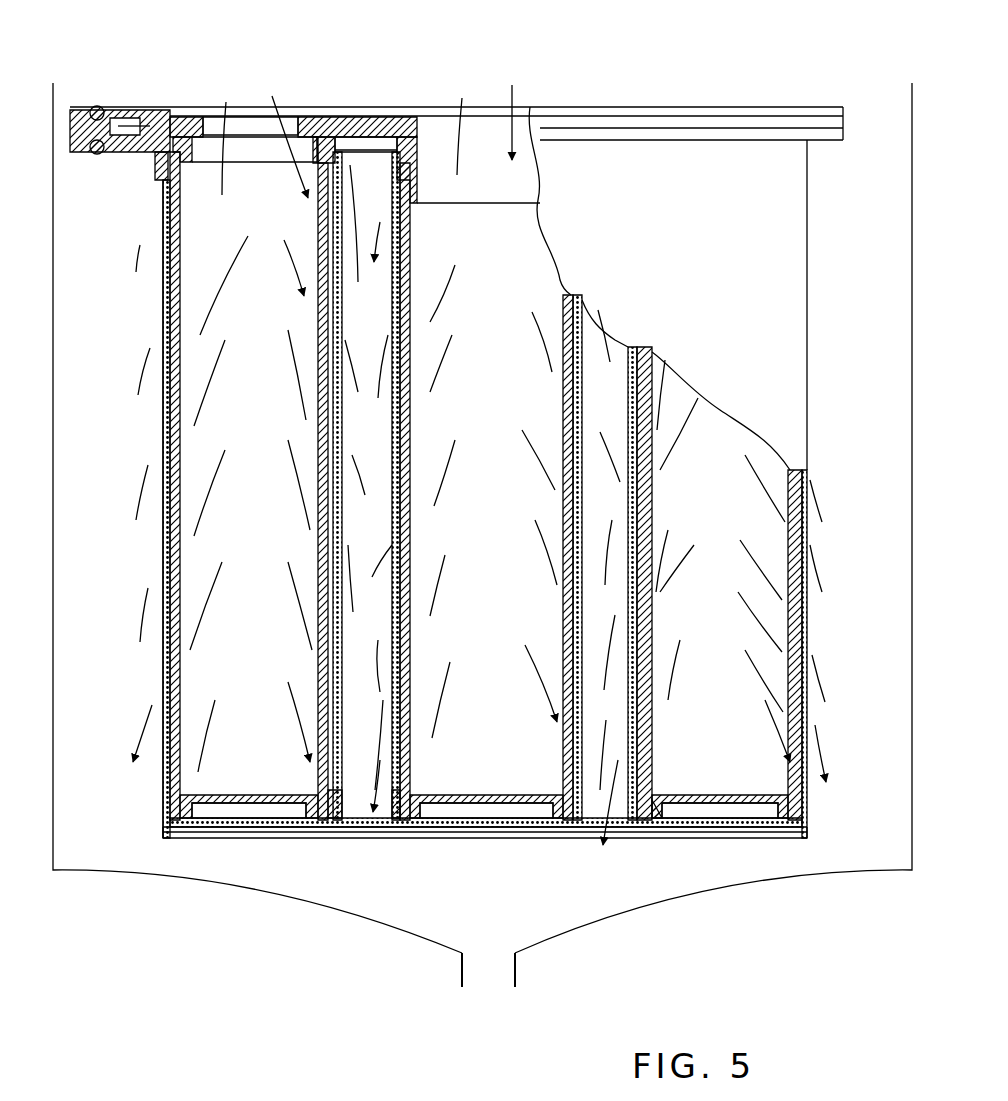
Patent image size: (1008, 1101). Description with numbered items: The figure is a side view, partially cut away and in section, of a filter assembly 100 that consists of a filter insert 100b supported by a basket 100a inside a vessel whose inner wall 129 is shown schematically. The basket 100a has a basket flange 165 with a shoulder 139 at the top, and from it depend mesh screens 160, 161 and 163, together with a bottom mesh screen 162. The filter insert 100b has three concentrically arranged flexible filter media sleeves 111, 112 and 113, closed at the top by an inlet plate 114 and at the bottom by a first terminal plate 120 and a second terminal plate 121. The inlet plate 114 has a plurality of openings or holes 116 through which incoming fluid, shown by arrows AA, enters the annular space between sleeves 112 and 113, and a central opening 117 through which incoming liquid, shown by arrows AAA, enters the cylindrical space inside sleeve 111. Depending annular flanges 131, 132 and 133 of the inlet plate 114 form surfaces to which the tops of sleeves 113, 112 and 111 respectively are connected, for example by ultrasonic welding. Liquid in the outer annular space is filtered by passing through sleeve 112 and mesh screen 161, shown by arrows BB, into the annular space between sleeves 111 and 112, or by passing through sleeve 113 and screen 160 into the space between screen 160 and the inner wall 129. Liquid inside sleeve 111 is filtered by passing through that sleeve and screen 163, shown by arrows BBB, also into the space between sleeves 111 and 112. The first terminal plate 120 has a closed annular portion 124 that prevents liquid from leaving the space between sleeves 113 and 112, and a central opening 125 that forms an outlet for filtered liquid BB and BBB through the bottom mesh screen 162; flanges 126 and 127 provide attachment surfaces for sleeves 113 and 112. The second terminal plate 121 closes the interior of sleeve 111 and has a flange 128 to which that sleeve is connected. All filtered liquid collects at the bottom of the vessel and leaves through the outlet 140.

The filter assembly 100 is at (134, 308).
The basket 100a is at (140, 182).
The filter insert 100b is at (180, 574).
The filter media sleeve 111 is at (410, 682).
The filter media sleeve 112 is at (318, 686).
The filter media sleeve 113 is at (163, 658).
The inlet plate 114 is at (368, 100).
The openings or holes 116 is at (250, 135).
The central opening 117 is at (395, 112).
The first terminal plate 120 is at (236, 826).
The second terminal plate 121 is at (520, 795).
The closed annular portion 124 is at (300, 795).
The central opening 125 is at (386, 826).
The flange 126 is at (186, 832).
The flange 127 is at (660, 805).
The flange 128 is at (414, 826).
The inner wall of the vessel 129 is at (58, 762).
The depending annular flange 131 is at (224, 165).
The depending annular flange 132 is at (340, 165).
The depending annular flange 133 is at (418, 192).
The shoulder 139 is at (118, 150).
The outlet 140 is at (462, 978).
The mesh screen 160 is at (160, 443).
The mesh screen 161 is at (343, 342).
The bottom mesh screen 162 is at (463, 826).
The mesh screen 163 is at (393, 404).
The basket flange 165 is at (118, 108).
The arrows AA is at (282, 165).
The arrows AAA is at (532, 103).
The arrows BB is at (162, 470).
The arrows BBB is at (380, 447).